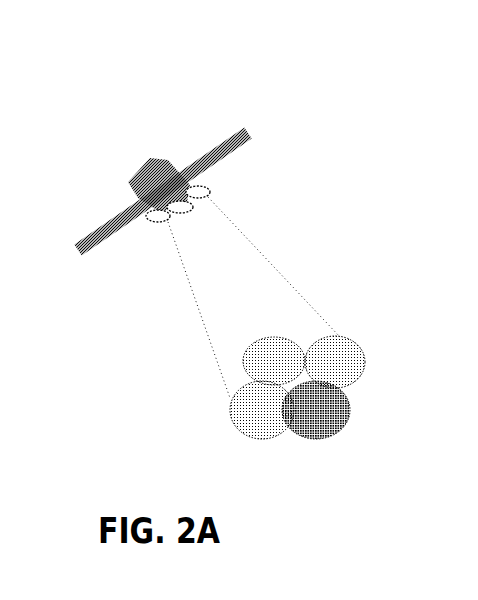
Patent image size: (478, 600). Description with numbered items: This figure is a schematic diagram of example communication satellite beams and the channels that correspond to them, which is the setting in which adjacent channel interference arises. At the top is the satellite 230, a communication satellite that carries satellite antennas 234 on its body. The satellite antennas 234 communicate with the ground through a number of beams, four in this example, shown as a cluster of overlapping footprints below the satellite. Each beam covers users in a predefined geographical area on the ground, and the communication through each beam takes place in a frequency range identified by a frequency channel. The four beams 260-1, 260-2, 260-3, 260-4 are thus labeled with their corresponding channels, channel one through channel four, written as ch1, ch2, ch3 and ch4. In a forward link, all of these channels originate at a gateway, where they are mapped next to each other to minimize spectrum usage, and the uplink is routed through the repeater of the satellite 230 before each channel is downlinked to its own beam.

The satellite 230 is at (257, 132).
The satellite antennas 234 is at (188, 213).
The beam 260-1 is at (247, 352).
The beam 260-2 is at (229, 422).
The beam 260-3 is at (336, 334).
The beam 260-4 is at (339, 424).